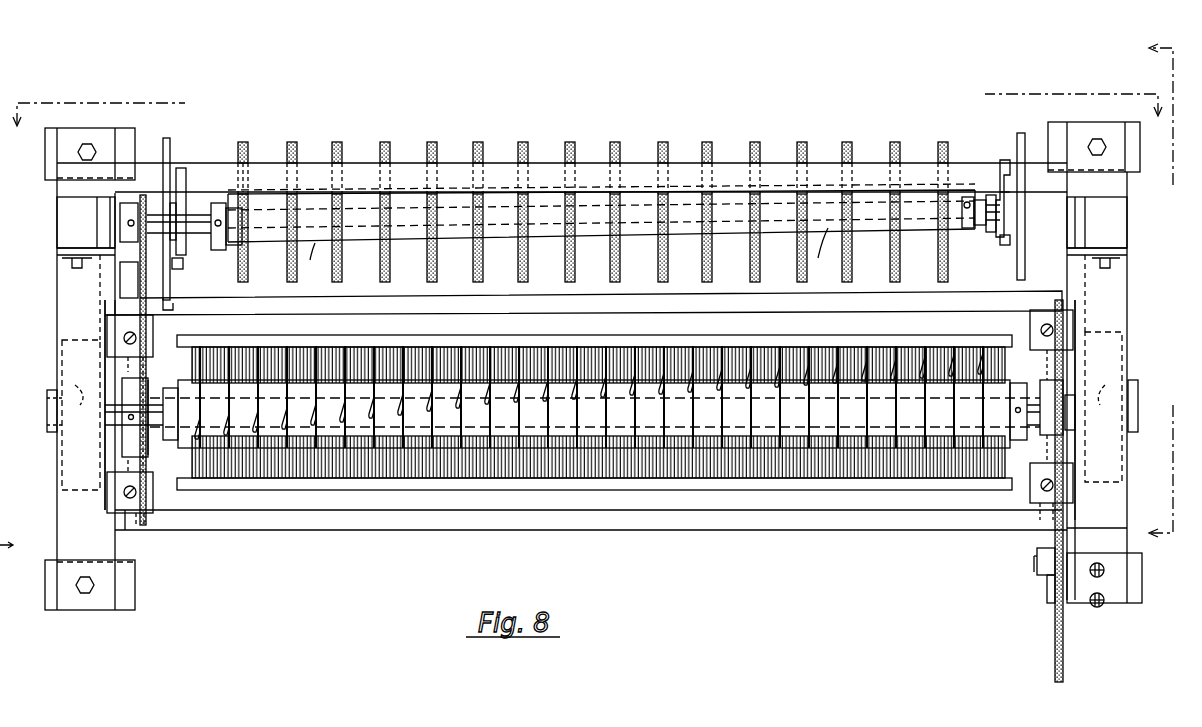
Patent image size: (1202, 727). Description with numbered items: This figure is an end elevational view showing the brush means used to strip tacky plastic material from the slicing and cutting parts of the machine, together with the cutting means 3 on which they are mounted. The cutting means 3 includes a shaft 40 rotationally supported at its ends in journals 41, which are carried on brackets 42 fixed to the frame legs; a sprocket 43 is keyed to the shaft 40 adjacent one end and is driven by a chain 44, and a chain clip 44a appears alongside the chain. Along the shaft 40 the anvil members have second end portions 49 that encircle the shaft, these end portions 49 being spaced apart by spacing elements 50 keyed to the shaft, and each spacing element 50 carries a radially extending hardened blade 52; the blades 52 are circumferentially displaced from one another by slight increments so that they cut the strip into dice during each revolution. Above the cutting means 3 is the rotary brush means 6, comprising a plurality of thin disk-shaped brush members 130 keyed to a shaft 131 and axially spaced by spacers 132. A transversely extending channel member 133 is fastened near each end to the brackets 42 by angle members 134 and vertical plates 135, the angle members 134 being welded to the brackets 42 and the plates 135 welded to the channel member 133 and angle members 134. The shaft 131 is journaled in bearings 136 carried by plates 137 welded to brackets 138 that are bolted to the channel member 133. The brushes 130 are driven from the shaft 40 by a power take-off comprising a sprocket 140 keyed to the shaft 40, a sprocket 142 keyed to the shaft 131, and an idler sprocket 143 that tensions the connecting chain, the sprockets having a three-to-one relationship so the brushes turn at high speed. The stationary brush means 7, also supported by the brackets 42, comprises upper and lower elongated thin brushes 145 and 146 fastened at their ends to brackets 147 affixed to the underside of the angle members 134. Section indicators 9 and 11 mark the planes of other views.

The cutting means 3 is at (547, 417).
The rotary brush means 6 is at (588, 152).
The stationary brush means 7 is at (460, 534).
The section line 9- 9 is at (585, 129).
The section line 11- 11 is at (588, 298).
The shaft 40 is at (75, 402).
The journals 41 is at (75, 385).
The brackets 42 is at (106, 313).
The sprocket 43 is at (1050, 434).
The chain 44 is at (1055, 638).
The belt clip 44a is at (1045, 578).
The second end portion 49 is at (545, 428).
The spacing elements 50 is at (445, 432).
The blade 52 is at (312, 396).
The brush members 130 is at (475, 148).
The shaft 131 is at (201, 238).
The spacers 132 is at (570, 254).
The channel member 133 is at (265, 170).
The angle members 134 is at (88, 248).
The vertical plates 135 is at (98, 208).
The bearings 136 is at (181, 180).
The plates 137 is at (171, 150).
The brackets 138 is at (185, 262).
The sprocket 140 is at (122, 436).
The sprocket 142 is at (128, 240).
The idler sprocket 143 is at (125, 282).
The upper brush 145 is at (188, 358).
The lower brush 146 is at (190, 468).
The brackets 147 is at (62, 338).